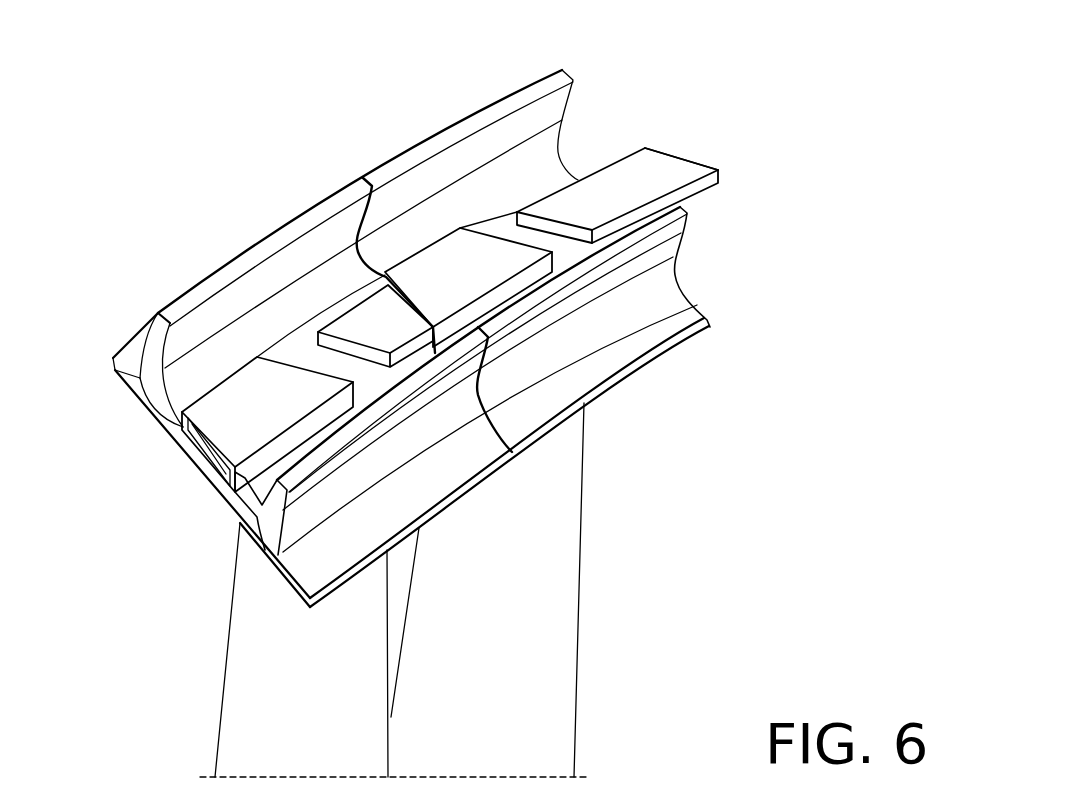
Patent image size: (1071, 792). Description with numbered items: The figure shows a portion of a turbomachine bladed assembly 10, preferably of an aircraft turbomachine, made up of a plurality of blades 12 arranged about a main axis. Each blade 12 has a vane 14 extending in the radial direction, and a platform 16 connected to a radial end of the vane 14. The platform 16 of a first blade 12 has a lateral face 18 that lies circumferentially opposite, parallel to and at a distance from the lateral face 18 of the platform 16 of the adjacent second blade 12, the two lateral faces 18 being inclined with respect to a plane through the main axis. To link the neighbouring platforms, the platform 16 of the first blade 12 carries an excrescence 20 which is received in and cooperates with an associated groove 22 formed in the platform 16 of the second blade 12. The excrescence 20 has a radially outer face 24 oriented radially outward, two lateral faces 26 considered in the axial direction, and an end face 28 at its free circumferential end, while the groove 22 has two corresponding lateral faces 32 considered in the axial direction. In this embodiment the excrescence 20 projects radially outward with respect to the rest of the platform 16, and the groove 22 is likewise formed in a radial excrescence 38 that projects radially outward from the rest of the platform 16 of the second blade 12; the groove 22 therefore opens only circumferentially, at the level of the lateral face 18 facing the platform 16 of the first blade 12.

The turbomachine bladed assembly 10 is at (833, 88).
The blade 12 is at (708, 495).
The vane 14 is at (242, 722).
The platform 16 is at (708, 277).
The lateral face 18 is at (702, 308).
The excrescence 20 is at (368, 322).
The groove 22 is at (652, 150).
The radially outer face 24 is at (672, 170).
The lateral faces of the excrescence 26 is at (620, 153).
The end face 28 is at (716, 177).
The lateral faces of the groove 32 is at (187, 444).
The radial excrescence 38 is at (222, 380).